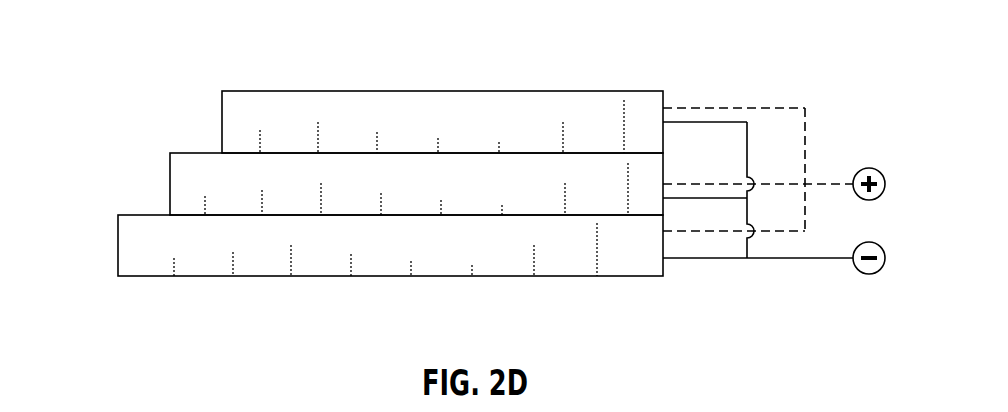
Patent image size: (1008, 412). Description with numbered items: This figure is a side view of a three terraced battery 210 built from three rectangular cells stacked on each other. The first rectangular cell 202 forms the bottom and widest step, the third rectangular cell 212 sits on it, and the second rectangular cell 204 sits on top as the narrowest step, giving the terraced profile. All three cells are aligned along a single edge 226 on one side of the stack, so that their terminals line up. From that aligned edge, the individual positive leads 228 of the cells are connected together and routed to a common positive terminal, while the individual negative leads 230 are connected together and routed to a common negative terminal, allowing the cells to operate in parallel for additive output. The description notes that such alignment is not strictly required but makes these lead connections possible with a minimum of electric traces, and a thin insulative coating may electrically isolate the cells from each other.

The three terraced battery 210 is at (249, 46).
The first rectangular cell 202 is at (118, 250).
The third rectangular cell 212 is at (170, 188).
The second rectangular cell 204 is at (222, 125).
The edge 226 is at (604, 100).
The individual positive leads 228 is at (806, 138).
The individual negative leads 230 is at (775, 260).